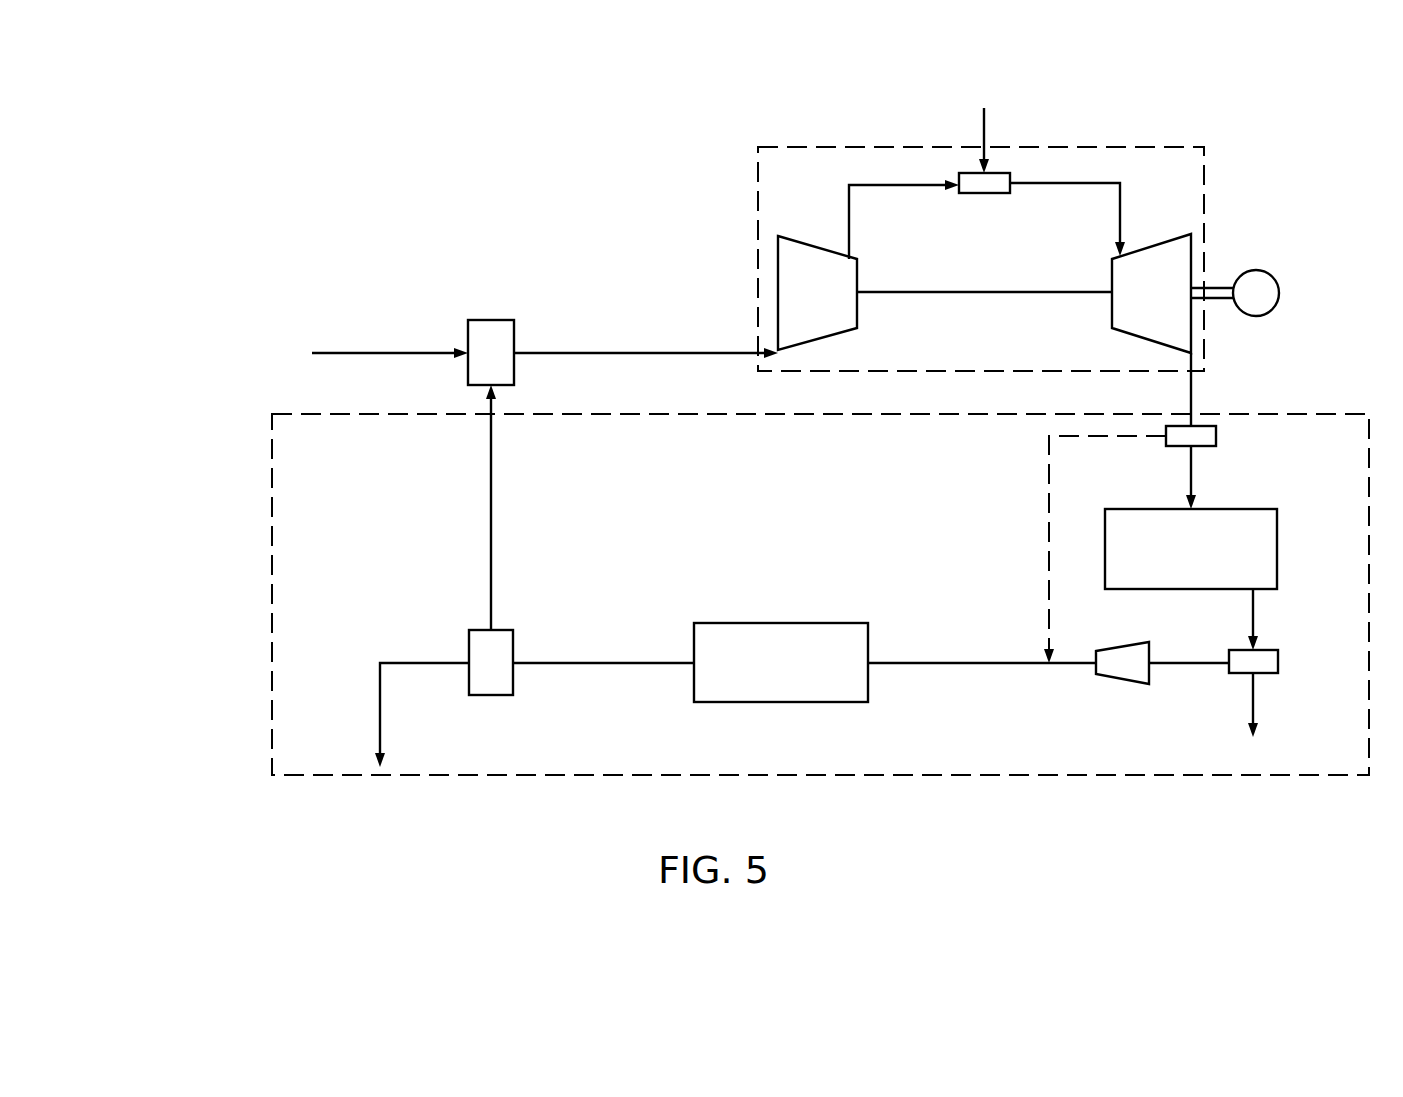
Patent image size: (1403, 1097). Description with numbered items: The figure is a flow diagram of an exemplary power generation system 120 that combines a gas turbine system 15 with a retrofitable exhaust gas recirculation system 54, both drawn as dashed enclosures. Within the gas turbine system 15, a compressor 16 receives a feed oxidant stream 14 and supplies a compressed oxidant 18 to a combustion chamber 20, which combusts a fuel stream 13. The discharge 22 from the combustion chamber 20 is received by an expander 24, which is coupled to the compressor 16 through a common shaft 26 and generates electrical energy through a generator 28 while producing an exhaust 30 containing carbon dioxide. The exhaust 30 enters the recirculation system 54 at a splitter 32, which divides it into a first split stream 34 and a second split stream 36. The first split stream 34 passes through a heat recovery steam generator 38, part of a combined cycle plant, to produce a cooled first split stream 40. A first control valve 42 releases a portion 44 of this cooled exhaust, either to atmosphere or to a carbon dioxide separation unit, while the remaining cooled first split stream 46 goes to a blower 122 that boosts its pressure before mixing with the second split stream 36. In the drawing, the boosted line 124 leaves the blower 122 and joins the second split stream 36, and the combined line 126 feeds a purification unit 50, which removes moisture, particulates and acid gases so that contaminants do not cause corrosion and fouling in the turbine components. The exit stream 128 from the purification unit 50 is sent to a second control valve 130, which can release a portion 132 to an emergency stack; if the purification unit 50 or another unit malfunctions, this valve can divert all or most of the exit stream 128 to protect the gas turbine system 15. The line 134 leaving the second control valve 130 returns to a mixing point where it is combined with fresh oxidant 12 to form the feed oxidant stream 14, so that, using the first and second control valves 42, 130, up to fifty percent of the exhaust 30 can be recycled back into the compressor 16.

The power generation system 120 is at (462, 116).
The fresh oxidant 12 is at (360, 352).
The fuel stream 13 is at (990, 117).
The feed oxidant stream 14 is at (628, 352).
The gas turbine system 15 is at (1204, 188).
The compressor 16 is at (778, 255).
The compressed oxidant 18 is at (866, 180).
The combustion chamber 20 is at (979, 194).
The discharge 22 is at (1040, 185).
The expander 24 is at (1192, 243).
The common shaft 26 is at (986, 294).
The generator 28 is at (1280, 294).
The exhaust 30 is at (1192, 388).
The splitter 32 is at (1216, 440).
The first split stream 34 is at (1191, 476).
The second split stream 36 is at (1049, 460).
The heat recovery steam generator 38 is at (1278, 549).
The cooled first split stream 40 is at (1256, 620).
The first control valve 42 is at (1279, 662).
The released portion of cooled first exhaust 44 is at (1255, 701).
The remaining cooled first split stream 46 is at (1192, 664).
The purification unit 50 is at (780, 703).
The exhaust gas recirculation system 54 is at (951, 776).
The blower 122 is at (1122, 673).
The compressed recirculated exhaust stream 124 is at (1068, 664).
The exhaust stream to processing unit 126 is at (933, 664).
The exit stream 128 is at (604, 664).
The second control valve 130 is at (490, 696).
The released portion to emergency stack 132 is at (380, 708).
The recirculated exhaust stream to mixer 134 is at (491, 503).